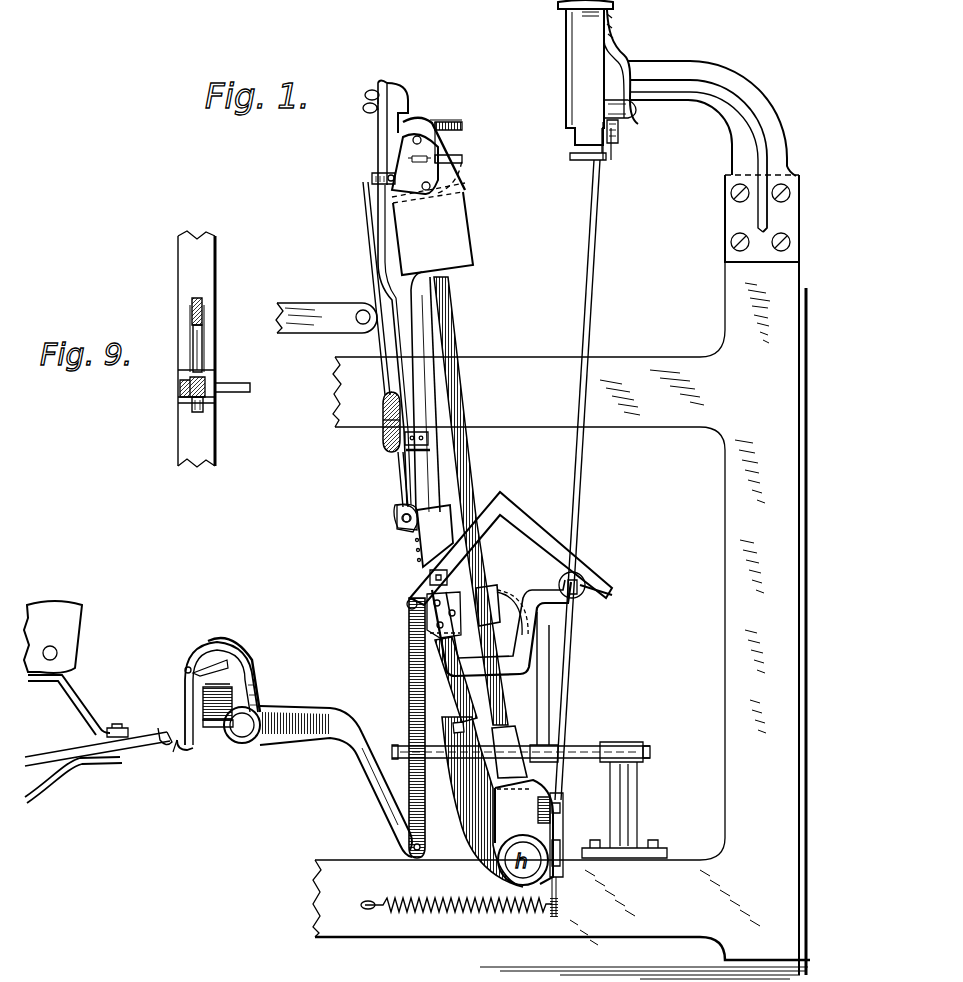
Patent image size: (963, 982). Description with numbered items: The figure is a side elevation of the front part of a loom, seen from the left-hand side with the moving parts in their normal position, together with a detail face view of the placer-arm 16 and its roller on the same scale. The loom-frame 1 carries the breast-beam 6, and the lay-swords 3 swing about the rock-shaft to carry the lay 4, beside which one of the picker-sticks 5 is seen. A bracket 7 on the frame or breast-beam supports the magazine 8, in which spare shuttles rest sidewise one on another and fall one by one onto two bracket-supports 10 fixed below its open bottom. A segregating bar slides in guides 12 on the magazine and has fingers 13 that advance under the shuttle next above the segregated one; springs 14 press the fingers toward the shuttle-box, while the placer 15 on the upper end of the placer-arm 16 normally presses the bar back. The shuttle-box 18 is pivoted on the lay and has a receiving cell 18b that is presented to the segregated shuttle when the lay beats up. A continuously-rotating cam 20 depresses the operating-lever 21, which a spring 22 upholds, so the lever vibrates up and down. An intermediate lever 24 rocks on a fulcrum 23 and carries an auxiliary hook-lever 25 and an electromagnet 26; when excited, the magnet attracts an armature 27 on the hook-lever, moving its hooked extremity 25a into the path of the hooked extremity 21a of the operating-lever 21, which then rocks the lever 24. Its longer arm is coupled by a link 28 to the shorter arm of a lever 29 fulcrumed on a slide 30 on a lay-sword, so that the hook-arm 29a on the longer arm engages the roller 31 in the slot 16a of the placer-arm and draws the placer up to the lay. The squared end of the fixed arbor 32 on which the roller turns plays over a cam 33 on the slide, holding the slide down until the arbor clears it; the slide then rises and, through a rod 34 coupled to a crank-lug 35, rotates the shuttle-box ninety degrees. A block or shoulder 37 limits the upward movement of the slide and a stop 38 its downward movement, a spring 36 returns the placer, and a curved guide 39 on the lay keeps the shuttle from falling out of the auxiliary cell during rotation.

In FIG. 1, the loom-frame 1 is at (561, 577).
In FIG. 1, the lay-swords 3 is at (413, 333).
In FIG. 1, the lay 4 is at (433, 233).
In FIG. 1, the picker-stick 5 is at (470, 458).
In FIG. 1, the breast-beam 6 is at (722, 228).
In FIG. 1, the bracket 7 is at (731, 78).
In FIG. 1, the magazine 8 is at (566, 44).
In FIG. 1, the bracket-supports 10 is at (583, 161).
In FIG. 1, the guides 12 is at (619, 124).
In FIG. 1, the fingers 13 is at (630, 116).
In FIG. 1, the springs 14 is at (616, 65).
In FIG. 1, the placer 15 is at (612, 152).
In FIG. 1, the placer-arm 16 is at (595, 318).
In FIG. 9, the placer-arm 16 is at (186, 272).
In FIG. 9, the slot 16a is at (190, 362).
In FIG. 1, the shuttle-box 18 is at (402, 293).
In FIG. 1, the receiving cell 18b is at (478, 121).
In FIG. 1, the cam 20 is at (68, 634).
In FIG. 1, the operating-lever 21 is at (58, 751).
In FIG. 1, the hooked extremity 21a is at (170, 729).
In FIG. 1, the spring 22 is at (52, 785).
In FIG. 1, the fulcrum 23 is at (246, 736).
In FIG. 1, the intermediate lever 24 is at (332, 692).
In FIG. 1, the auxiliary hook-lever 25 is at (185, 678).
In FIG. 1, the hooked extremity 25a is at (180, 750).
In FIG. 1, the electromagnet 26 is at (218, 722).
In FIG. 1, the armature 27 is at (222, 664).
In FIG. 1, the link 28 is at (402, 687).
In FIG. 1, the lever 29 is at (500, 502).
In FIG. 9, the lever 29 is at (201, 298).
In FIG. 1, the hook-arm 29a is at (592, 571).
In FIG. 9, the hook-arm 29a is at (199, 348).
In FIG. 1, the slide 30 is at (423, 544).
In FIG. 1, the roller 31 is at (577, 604).
In FIG. 9, the roller 31 is at (190, 398).
In FIG. 1, the arbor 32 is at (578, 598).
In FIG. 9, the arbor 32 is at (229, 391).
In FIG. 1, the cam 33 is at (533, 588).
In FIG. 1, the rod 34 is at (362, 264).
In FIG. 1, the crank-lug 35 is at (374, 178).
In FIG. 1, the spring 36 is at (456, 892).
In FIG. 1, the block or shoulder 37 is at (405, 445).
In FIG. 1, the stop 38 is at (473, 691).
In FIG. 1, the curved guide 39 is at (464, 180).